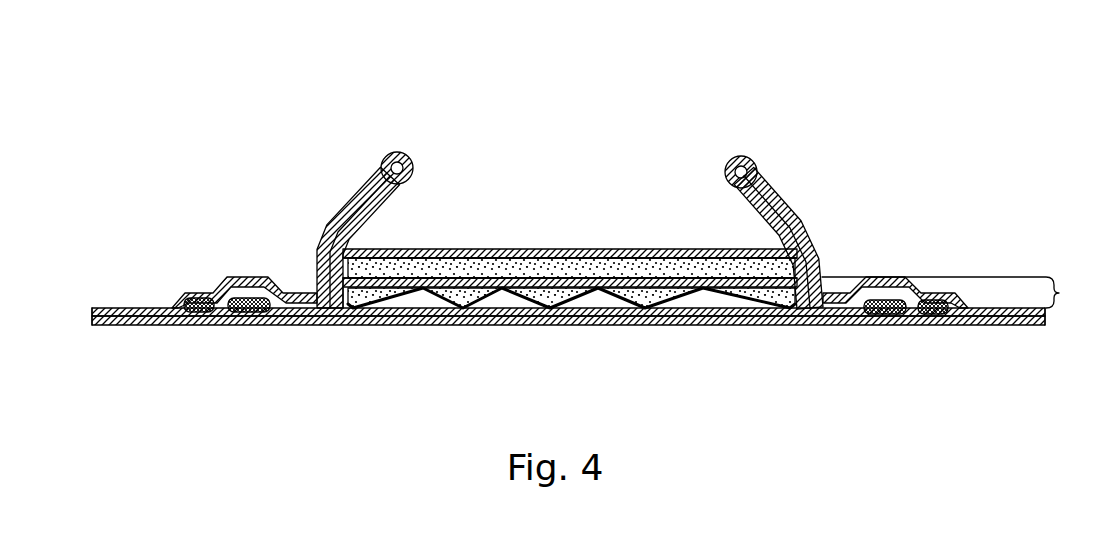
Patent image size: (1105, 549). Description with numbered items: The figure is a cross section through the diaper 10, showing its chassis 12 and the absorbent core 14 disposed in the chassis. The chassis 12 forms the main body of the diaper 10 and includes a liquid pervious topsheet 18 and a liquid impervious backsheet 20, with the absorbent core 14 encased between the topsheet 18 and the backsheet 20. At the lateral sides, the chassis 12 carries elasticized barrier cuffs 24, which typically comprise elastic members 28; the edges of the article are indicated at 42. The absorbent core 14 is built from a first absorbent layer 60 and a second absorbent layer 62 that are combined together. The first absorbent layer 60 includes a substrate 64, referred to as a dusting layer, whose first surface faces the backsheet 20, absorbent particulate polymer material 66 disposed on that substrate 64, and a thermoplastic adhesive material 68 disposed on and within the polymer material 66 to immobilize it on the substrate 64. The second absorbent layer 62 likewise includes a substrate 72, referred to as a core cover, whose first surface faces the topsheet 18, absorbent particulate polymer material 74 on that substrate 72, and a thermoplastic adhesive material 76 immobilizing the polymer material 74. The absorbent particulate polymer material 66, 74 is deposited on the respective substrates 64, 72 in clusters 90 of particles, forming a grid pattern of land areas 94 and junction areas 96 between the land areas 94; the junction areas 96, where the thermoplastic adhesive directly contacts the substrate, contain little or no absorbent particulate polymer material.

The diaper 10 is at (591, 170).
The chassis 12 is at (771, 316).
The absorbent core 14 is at (734, 330).
The topsheet 18 is at (502, 250).
The backsheet 20 is at (557, 326).
The elasticized barrier cuffs 24 is at (322, 215).
The elastic members 28 is at (405, 160).
The edge of article 42 is at (92, 324).
The first absorbent layer 60 is at (512, 326).
The second absorbent layer 62 is at (473, 250).
The substrate 64 is at (607, 326).
The absorbent particulate polymer material 66 is at (703, 336).
The thermoplastic adhesive material 68 is at (642, 326).
The substrate 72 is at (432, 297).
The absorbent particulate polymer material 74 is at (553, 250).
The thermoplastic adhesive material 76 is at (385, 300).
The clusters 90 is at (392, 300).
The land areas 94 is at (452, 250).
The junction areas 96 is at (583, 250).